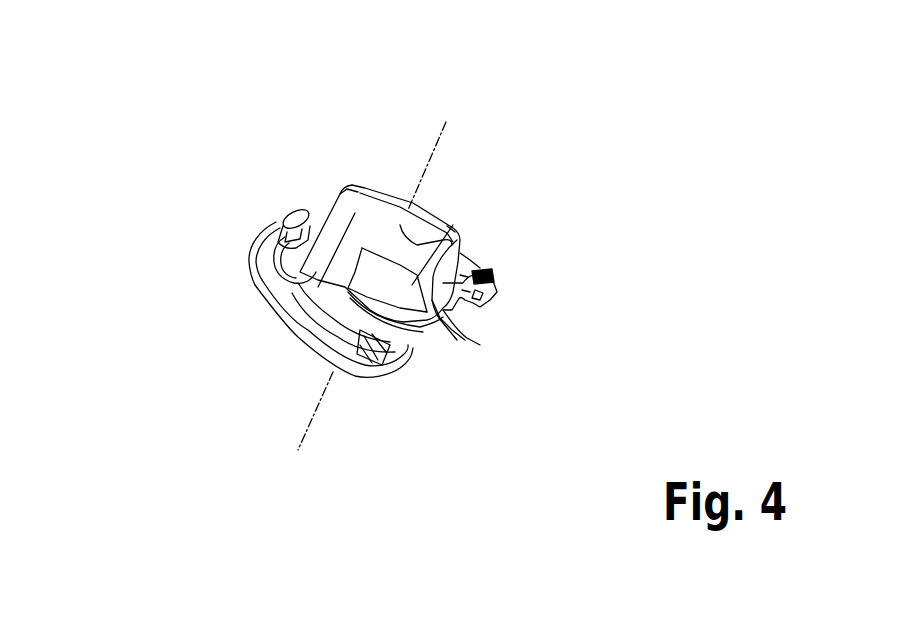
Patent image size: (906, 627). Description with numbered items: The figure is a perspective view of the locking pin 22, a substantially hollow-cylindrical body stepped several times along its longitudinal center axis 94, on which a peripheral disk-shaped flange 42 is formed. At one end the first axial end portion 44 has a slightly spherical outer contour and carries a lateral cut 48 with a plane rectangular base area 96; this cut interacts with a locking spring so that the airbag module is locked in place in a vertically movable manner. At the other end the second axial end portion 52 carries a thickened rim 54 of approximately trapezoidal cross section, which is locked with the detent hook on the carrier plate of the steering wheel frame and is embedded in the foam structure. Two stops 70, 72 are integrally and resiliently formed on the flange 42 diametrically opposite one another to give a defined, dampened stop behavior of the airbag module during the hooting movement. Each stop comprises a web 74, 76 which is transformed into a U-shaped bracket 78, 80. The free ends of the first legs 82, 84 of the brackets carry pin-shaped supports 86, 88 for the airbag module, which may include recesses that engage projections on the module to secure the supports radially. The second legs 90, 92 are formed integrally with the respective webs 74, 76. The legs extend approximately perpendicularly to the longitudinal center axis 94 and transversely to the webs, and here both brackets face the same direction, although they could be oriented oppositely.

The locking pin 22 is at (538, 168).
The flange 42 is at (352, 374).
The first axial end portion 44 is at (330, 183).
The cut 48 is at (317, 360).
The second axial end portion 52 is at (415, 388).
The thickened rim 54 is at (298, 333).
The stop 70 is at (216, 192).
The stop 72 is at (521, 291).
The web 74 is at (287, 305).
The web 76 is at (455, 350).
The U-shaped bracket 78 is at (238, 261).
The U-shaped bracket 80 is at (463, 317).
The first leg 82 is at (263, 233).
The first leg 84 is at (475, 303).
The pin-shaped support 86 is at (288, 210).
The pin-shaped support 88 is at (487, 270).
The second leg 90 is at (262, 262).
The second leg 92 is at (463, 337).
The longitudinal center axis 94 is at (428, 174).
The plane rectangular base area 96 is at (458, 230).